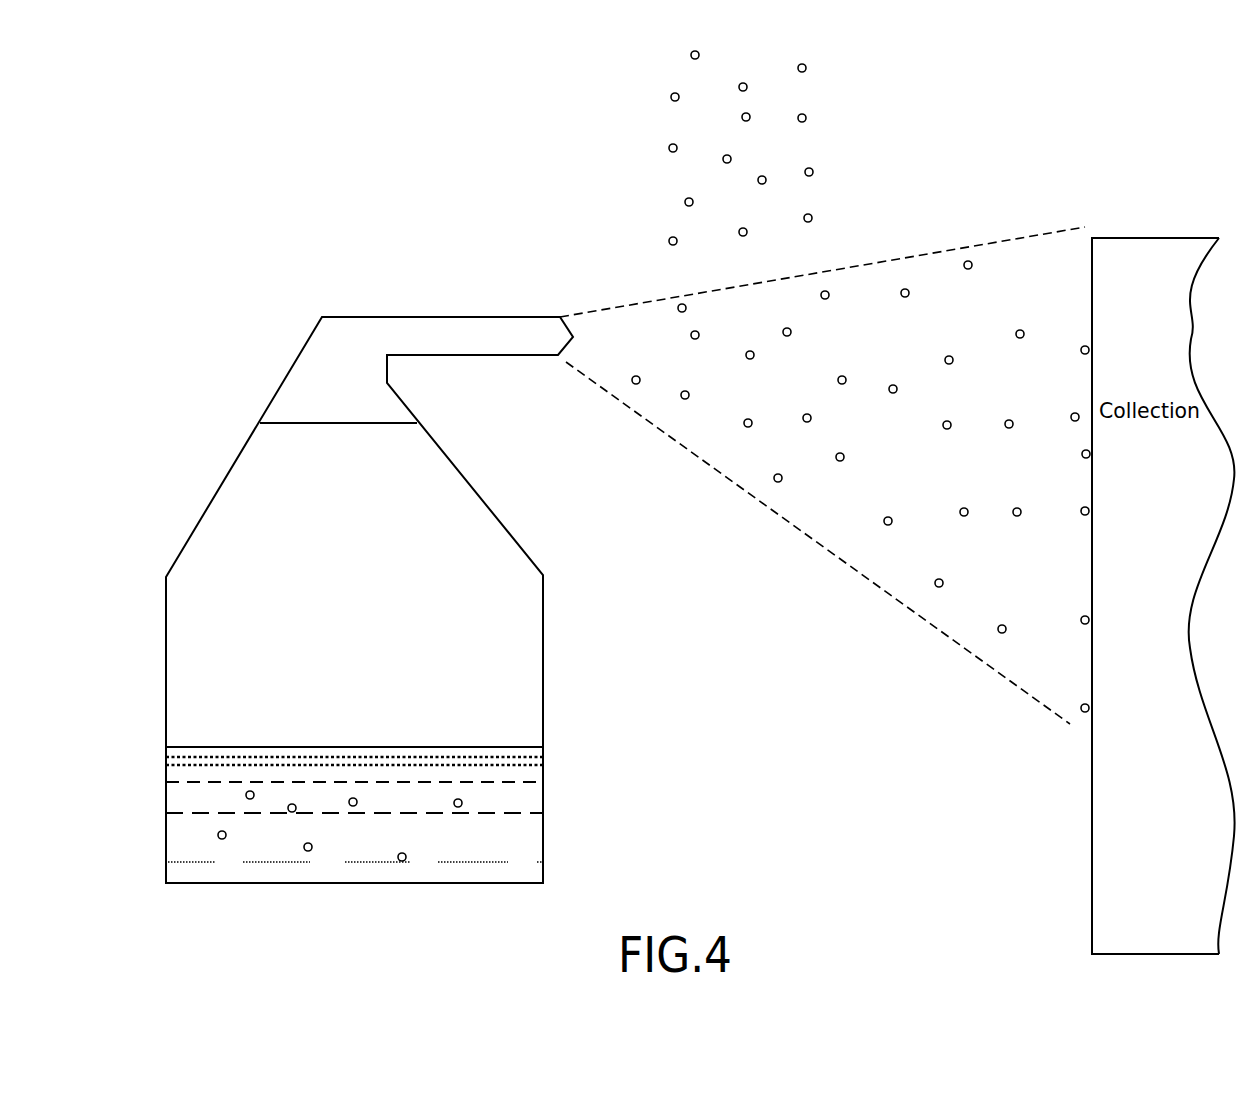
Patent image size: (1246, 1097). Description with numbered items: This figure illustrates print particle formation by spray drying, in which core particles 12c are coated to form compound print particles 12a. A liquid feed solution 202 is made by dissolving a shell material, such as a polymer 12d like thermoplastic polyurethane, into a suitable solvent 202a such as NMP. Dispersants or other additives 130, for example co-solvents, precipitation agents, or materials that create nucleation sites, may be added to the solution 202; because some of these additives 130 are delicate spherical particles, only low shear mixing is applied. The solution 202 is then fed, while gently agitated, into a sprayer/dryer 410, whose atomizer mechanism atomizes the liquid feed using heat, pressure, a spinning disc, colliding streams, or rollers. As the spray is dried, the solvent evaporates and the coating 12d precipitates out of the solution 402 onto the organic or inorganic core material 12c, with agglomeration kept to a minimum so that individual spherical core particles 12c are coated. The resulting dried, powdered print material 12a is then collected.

The sprayer/dryer 410 is at (338, 317).
The polymer coating 12d is at (613, 307).
The core inner-particle 12c is at (806, 70).
The compound print particle 12a is at (965, 262).
The solution 402 is at (407, 747).
The liquid feed solution 202 is at (498, 757).
The solvent 202a is at (192, 867).
The dispersants or other additives 130 is at (404, 858).